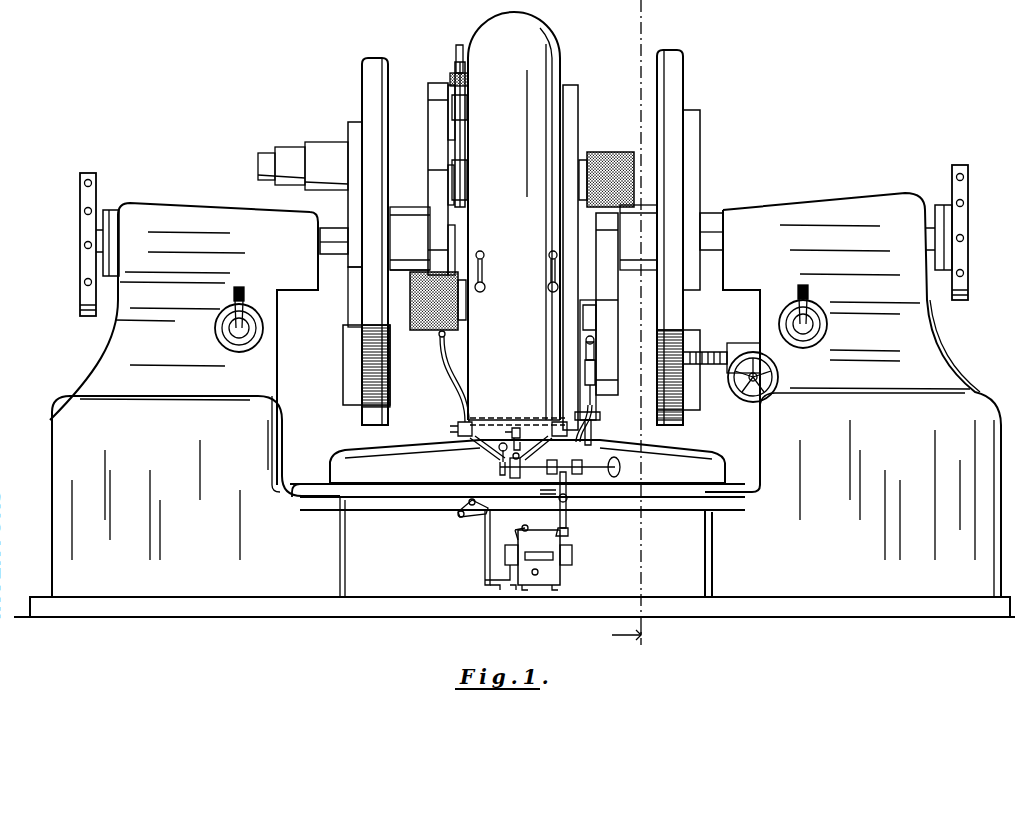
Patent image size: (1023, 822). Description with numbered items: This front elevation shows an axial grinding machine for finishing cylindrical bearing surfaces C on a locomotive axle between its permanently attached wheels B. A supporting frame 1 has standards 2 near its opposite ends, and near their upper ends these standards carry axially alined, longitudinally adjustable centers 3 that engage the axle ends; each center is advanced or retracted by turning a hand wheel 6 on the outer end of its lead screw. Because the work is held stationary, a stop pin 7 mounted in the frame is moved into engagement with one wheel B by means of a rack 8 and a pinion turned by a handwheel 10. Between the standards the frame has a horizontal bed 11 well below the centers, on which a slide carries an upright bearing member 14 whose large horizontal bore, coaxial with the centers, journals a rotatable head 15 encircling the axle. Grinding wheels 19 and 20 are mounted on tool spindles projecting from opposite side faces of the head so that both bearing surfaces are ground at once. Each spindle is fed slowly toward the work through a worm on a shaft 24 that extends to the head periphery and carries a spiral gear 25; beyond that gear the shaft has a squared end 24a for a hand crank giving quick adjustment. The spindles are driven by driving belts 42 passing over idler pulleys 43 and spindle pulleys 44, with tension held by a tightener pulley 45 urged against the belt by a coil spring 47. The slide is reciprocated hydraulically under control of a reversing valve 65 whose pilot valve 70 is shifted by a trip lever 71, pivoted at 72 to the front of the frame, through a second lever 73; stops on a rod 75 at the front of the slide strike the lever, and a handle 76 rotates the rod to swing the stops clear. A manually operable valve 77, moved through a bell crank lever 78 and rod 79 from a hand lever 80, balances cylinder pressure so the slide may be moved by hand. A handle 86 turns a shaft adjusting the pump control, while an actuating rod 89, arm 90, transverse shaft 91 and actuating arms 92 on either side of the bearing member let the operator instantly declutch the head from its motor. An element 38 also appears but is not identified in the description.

The supporting frame 1 is at (380, 614).
The standards 2 is at (116, 318).
The centers 3 is at (336, 254).
The hand wheel 6 is at (80, 200).
The stop pin 7 is at (718, 352).
The rack 8 is at (615, 637).
The handwheel 10 is at (778, 378).
The horizontal bed 11 is at (715, 490).
The upright bearing member 14 is at (556, 58).
The rotatable head 15 is at (578, 105).
The grinding wheel 19 is at (608, 152).
The grinding wheel 20 is at (432, 331).
The shaft 24 is at (463, 150).
The squared end 24a is at (458, 60).
The spiral gear 25 is at (452, 78).
The pins 38 is at (548, 258).
The driving belt 42 is at (440, 152).
The idler pulley 43 is at (428, 105).
The pulley 44 is at (440, 178).
The tightener pulley 45 is at (586, 338).
The coil spring 47 is at (586, 365).
The reversing valve 65 is at (572, 573).
The pilot valve 70 is at (516, 532).
The trip lever 71 is at (540, 492).
The pivot 72 is at (567, 503).
The second lever 73 is at (568, 531).
The rod 75 is at (621, 467).
The handle 76 is at (500, 467).
The manually operable valve 77 is at (518, 594).
The bell crank lever 78 is at (495, 592).
The rod 79 is at (486, 565).
The hand lever 80 is at (470, 517).
The handle 86 is at (244, 300).
The actuating rod 89 is at (456, 432).
The arm 90 is at (548, 425).
The transverse shaft 91 is at (500, 430).
The actuating arm 92 is at (444, 358).
The wheels B is at (374, 62).
The cylindrical bearing surfaces C is at (403, 215).